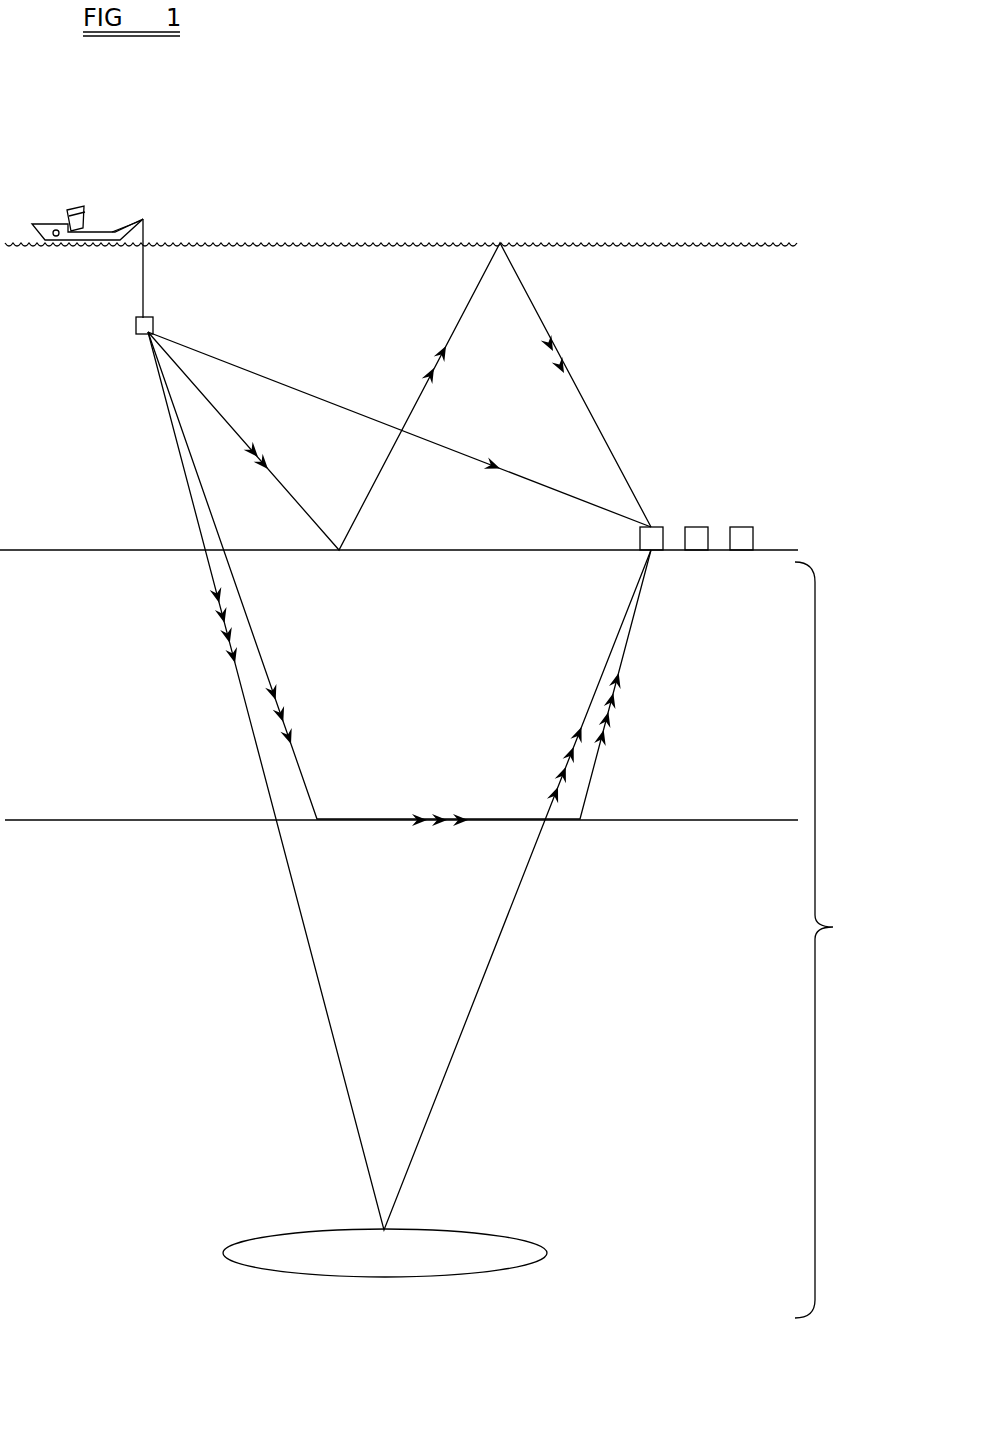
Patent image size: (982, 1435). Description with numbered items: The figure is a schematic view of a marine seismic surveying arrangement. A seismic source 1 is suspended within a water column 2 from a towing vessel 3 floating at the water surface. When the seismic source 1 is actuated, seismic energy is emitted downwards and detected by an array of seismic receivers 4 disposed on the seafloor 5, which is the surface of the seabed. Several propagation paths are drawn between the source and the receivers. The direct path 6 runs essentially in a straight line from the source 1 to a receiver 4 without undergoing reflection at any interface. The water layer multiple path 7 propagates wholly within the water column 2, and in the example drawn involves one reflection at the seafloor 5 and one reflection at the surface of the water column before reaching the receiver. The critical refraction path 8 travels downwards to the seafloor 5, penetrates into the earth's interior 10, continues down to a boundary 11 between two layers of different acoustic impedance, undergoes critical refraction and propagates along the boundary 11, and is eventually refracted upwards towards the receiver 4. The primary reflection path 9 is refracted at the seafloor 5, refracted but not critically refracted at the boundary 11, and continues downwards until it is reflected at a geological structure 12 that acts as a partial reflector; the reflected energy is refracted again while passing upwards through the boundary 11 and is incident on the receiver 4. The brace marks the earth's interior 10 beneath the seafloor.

The seismic source 1 is at (136, 327).
The water column 2 is at (401, 274).
The towing vessel 3 is at (77, 206).
The seismic receivers 4 is at (742, 527).
The seafloor 5 is at (797, 549).
The direct path 6 is at (238, 364).
The water layer multiple path 7 is at (370, 493).
The critical refraction path 8 is at (255, 640).
The primary reflection path 9 is at (312, 957).
The earth's interior 10 is at (834, 940).
The boundary 11 is at (698, 818).
The geological structure 12 is at (472, 1232).